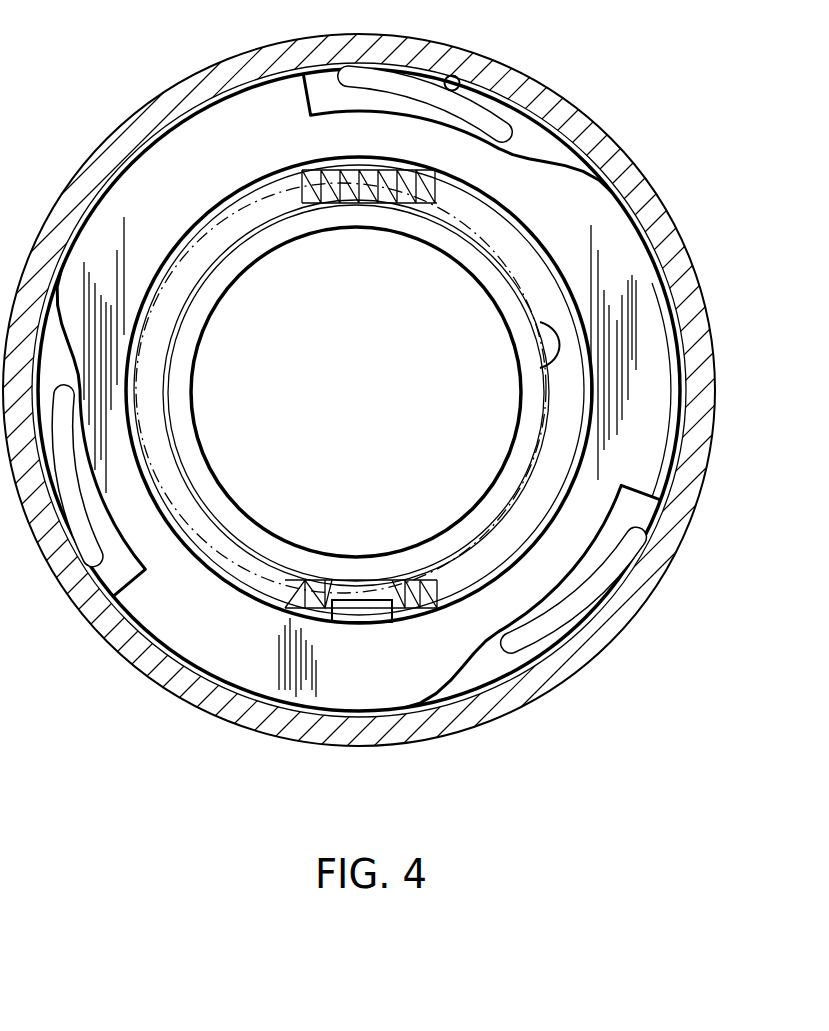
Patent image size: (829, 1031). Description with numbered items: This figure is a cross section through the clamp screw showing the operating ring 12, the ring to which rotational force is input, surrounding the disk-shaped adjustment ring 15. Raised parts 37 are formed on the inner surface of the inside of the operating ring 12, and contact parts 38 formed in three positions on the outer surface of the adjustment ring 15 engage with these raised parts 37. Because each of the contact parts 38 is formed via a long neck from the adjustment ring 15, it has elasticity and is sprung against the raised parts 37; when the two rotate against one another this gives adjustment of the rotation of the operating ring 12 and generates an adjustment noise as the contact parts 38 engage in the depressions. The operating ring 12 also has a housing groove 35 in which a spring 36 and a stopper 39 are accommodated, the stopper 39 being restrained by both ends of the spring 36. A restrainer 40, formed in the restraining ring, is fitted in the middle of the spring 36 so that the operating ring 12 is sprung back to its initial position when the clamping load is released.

The operating ring 12 is at (648, 186).
The adjustment ring 15 is at (562, 177).
The groove 35 is at (543, 366).
The spring 36 is at (526, 268).
The raised parts 37 is at (458, 74).
The contact parts 38 is at (367, 72).
The stopper 39 is at (356, 393).
The restrainer 40 is at (365, 178).